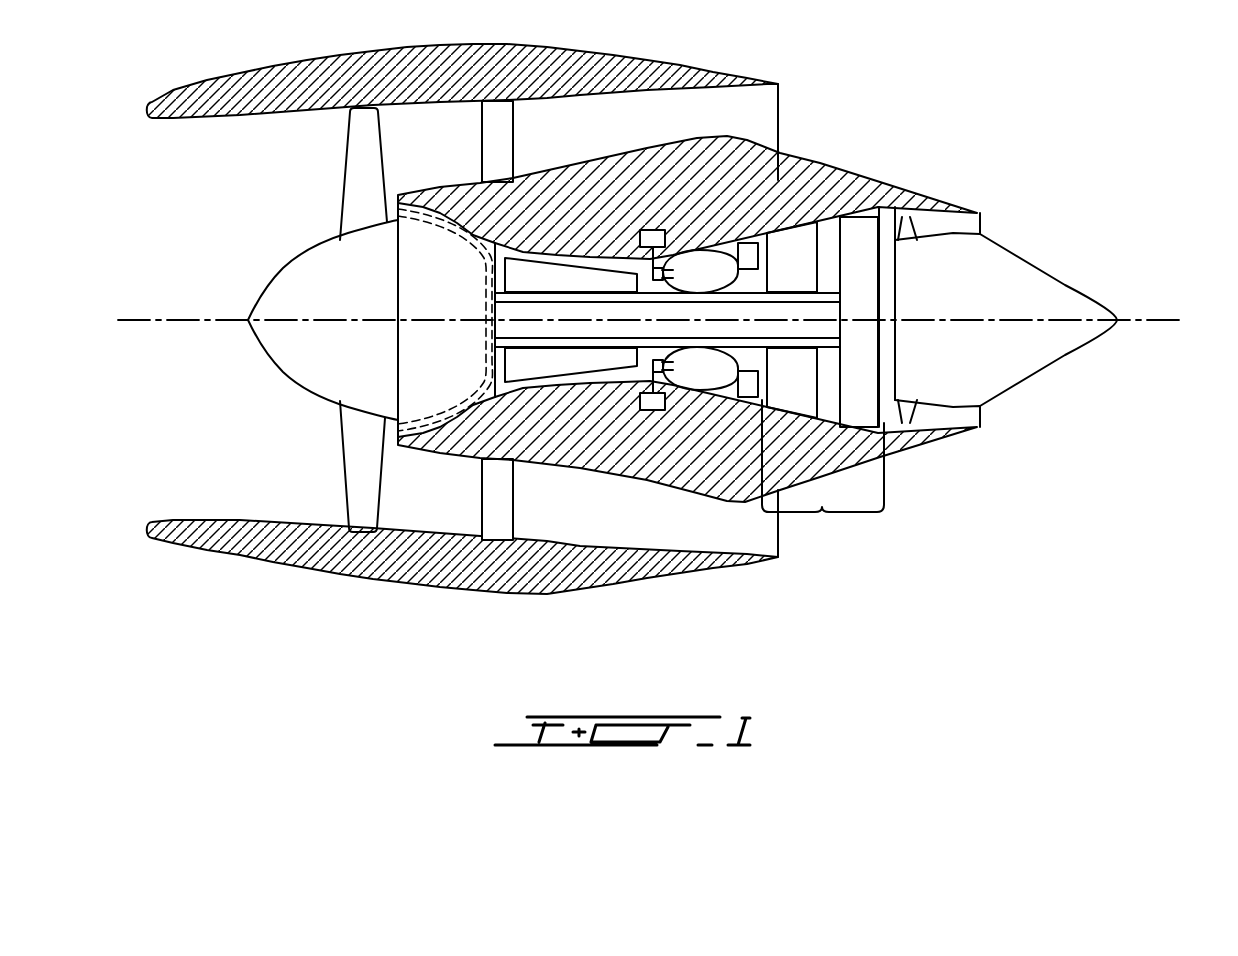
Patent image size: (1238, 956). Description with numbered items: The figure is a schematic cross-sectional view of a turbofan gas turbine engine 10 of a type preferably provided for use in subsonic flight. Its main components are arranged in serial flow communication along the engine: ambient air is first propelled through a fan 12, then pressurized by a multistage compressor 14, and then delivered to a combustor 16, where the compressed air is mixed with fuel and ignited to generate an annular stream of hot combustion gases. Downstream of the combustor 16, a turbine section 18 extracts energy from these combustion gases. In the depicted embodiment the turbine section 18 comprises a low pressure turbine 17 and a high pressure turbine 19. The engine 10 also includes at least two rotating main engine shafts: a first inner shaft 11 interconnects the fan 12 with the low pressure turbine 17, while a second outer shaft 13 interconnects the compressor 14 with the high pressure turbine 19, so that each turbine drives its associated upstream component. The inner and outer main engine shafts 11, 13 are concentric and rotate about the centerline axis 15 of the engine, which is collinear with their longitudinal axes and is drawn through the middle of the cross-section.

The turbofan gas turbine engine 10 is at (914, 114).
The first inner shaft 11 is at (826, 280).
The fan 12 is at (358, 457).
The second outer shaft 13 is at (750, 290).
The multistage compressor 14 is at (575, 277).
The centerline axis 15 is at (1156, 320).
The combustor 16 is at (707, 373).
The low pressure turbine 17 is at (865, 233).
The turbine section 18 is at (822, 512).
The high pressure turbine 19 is at (800, 247).